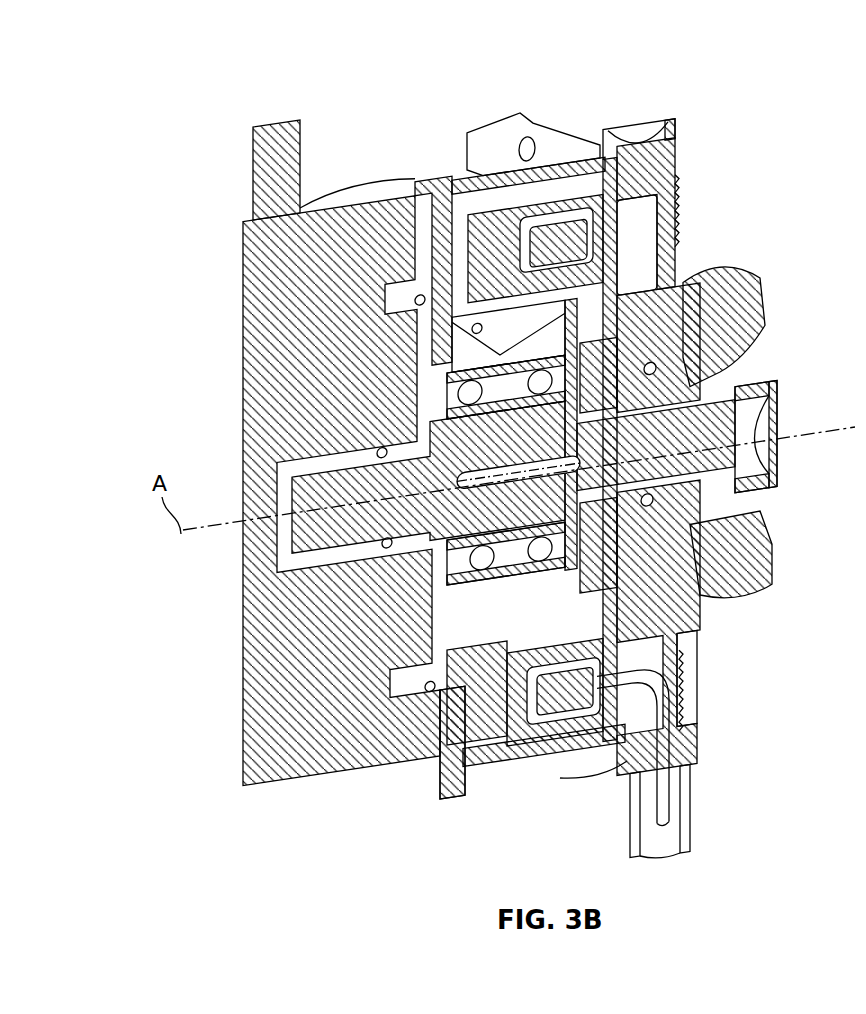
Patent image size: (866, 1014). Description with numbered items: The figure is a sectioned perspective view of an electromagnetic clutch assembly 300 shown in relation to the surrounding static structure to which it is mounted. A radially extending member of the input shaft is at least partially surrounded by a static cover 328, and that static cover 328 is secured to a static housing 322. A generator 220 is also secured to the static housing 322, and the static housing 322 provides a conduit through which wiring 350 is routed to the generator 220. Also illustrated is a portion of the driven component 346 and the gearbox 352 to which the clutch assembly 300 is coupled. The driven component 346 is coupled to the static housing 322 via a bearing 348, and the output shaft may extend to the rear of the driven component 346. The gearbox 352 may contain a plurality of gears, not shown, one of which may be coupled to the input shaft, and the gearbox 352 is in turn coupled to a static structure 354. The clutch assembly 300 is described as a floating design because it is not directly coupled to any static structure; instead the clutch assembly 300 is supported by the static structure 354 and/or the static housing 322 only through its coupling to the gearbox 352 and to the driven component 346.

The electromagnetic clutch assembly 300 is at (150, 46).
The static structure 354 is at (272, 170).
The gearbox 352 is at (270, 312).
The static housing 322 is at (648, 178).
The generator 220 is at (575, 243).
The driven component 346 is at (778, 482).
The bearing 348 is at (748, 517).
The wiring 350 is at (666, 698).
The static cover 328 is at (440, 748).